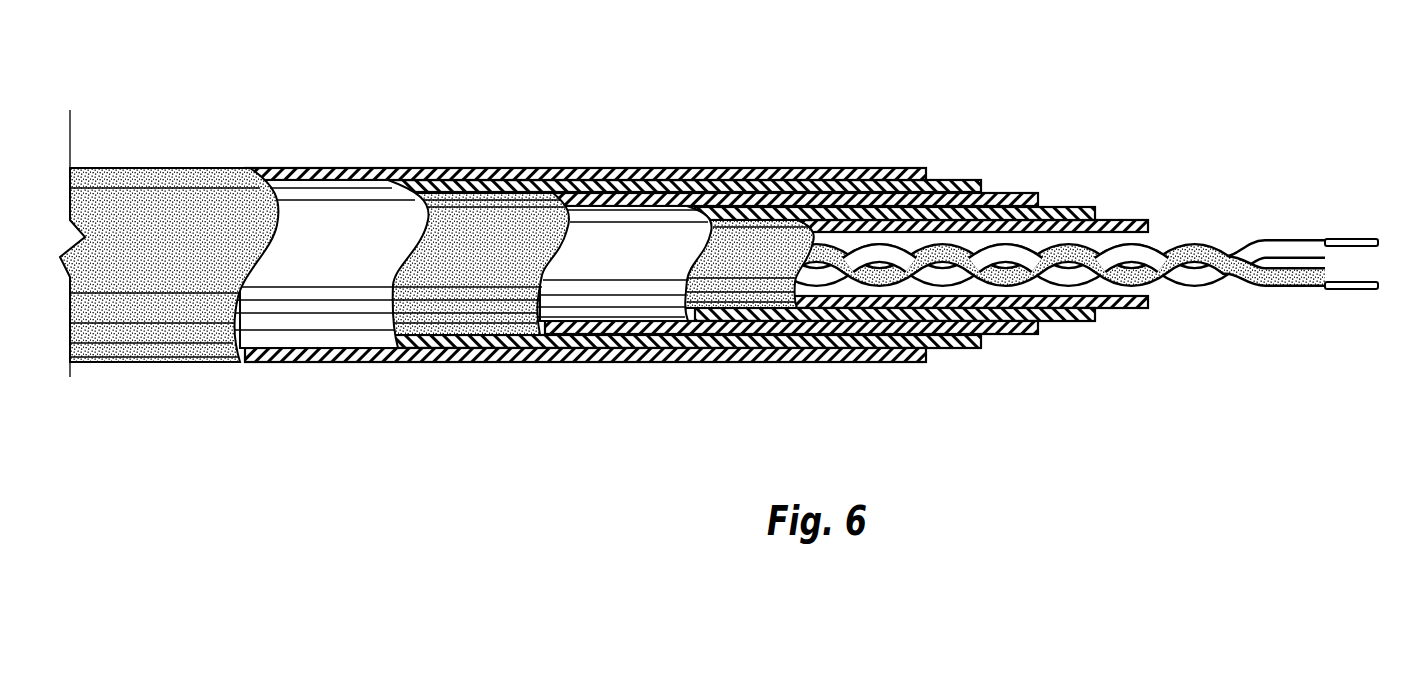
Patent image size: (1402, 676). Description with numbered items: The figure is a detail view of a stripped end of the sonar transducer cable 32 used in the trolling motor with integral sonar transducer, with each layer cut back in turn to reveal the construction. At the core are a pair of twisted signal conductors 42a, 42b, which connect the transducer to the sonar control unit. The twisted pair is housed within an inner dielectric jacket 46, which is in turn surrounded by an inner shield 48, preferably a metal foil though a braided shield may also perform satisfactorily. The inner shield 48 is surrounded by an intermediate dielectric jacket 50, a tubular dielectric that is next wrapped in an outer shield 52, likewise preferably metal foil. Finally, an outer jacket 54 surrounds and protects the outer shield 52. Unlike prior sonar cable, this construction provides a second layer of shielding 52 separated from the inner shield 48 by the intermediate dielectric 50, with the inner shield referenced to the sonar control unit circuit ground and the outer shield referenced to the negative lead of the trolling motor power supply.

The cable 32 is at (360, 138).
The first insulated conductor 42a is at (1287, 287).
The second insulated conductor 42b is at (1290, 245).
The inner dielectric jacket 46 is at (762, 283).
The inner shield 48 is at (620, 280).
The intermediate dielectric jacket 50 is at (486, 278).
The outer shield 52 is at (345, 278).
The outer jacket 54 is at (207, 278).